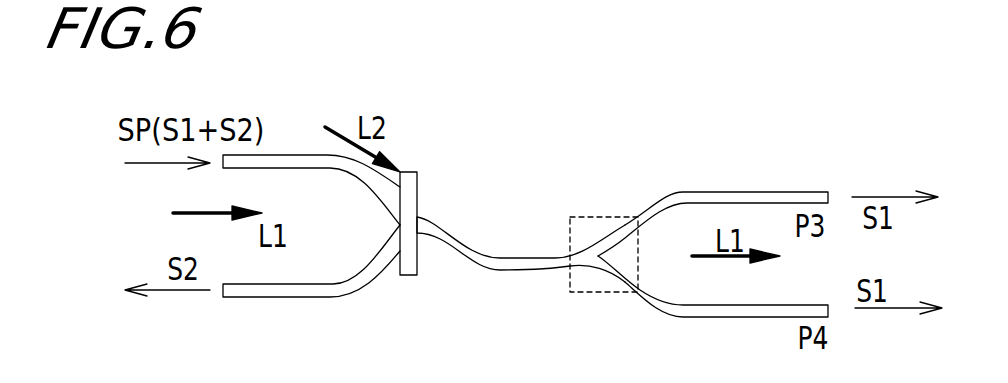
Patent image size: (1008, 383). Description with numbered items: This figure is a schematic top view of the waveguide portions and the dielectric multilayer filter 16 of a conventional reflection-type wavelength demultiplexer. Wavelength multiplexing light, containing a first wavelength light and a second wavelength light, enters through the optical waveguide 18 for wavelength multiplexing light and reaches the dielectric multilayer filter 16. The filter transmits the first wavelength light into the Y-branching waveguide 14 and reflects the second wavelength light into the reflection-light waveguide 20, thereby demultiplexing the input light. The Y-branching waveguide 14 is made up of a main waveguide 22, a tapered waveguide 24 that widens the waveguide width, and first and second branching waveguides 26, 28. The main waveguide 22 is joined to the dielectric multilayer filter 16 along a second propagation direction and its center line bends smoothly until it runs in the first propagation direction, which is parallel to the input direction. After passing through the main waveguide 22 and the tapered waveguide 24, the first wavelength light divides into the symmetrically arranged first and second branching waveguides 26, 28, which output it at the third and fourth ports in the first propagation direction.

The Y-branching waveguide 14 is at (639, 178).
The dielectric multilayer filter 16 is at (412, 174).
The optical waveguide for wavelength multiplexing light 18 is at (311, 140).
The reflection-light waveguide 20 is at (269, 301).
The main waveguide 22 is at (521, 189).
The tapered waveguide 24 is at (611, 194).
The first branching waveguide 26 is at (713, 176).
The second branching waveguide 28 is at (725, 206).